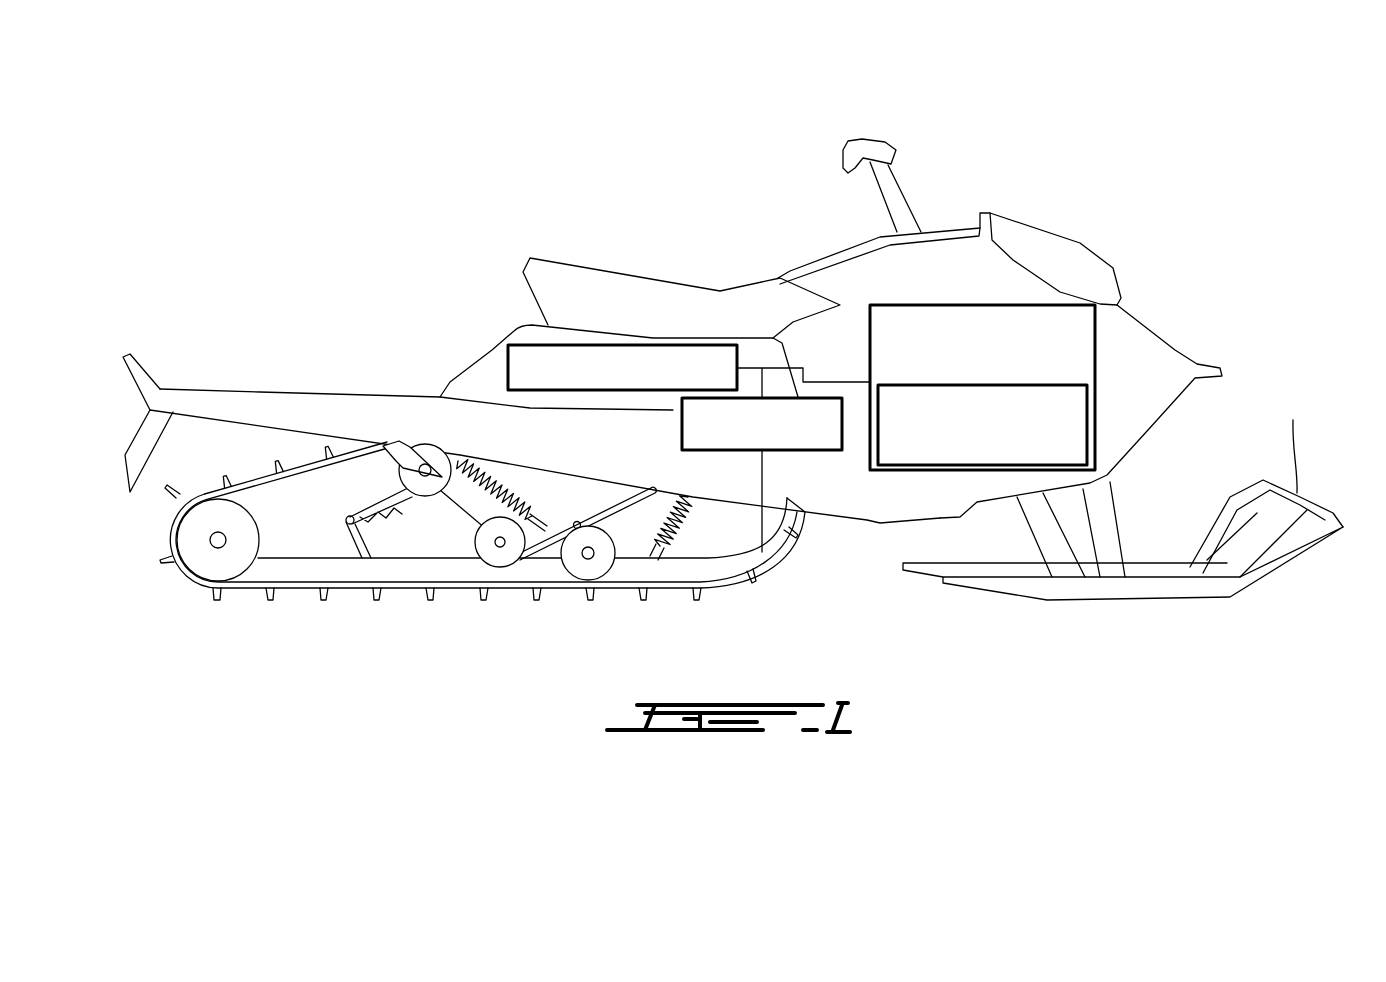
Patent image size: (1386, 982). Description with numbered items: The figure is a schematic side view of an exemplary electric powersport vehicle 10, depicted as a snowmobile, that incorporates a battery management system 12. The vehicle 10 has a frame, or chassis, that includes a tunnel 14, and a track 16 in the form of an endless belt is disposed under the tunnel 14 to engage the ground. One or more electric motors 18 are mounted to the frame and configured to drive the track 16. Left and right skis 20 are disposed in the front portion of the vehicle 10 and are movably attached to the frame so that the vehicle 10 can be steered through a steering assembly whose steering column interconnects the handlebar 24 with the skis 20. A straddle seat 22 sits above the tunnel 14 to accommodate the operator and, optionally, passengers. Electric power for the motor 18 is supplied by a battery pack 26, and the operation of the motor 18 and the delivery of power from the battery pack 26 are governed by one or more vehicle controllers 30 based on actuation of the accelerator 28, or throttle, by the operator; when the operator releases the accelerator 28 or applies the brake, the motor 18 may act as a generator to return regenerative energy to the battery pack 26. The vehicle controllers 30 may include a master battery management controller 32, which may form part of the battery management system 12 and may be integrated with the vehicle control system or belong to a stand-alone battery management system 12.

The electric powersport vehicle 10 is at (257, 211).
The battery management system 12 is at (1131, 346).
The tunnel 14 is at (262, 392).
The track 16 is at (400, 592).
The electric motor 18 is at (717, 450).
The skis 20 is at (1267, 480).
The straddle seat 22 is at (617, 300).
The handlebar 24 is at (883, 158).
The battery pack 26 is at (517, 352).
The accelerator 28 is at (847, 150).
The vehicle controller 30 is at (992, 305).
The master battery management controller 32 is at (1078, 433).